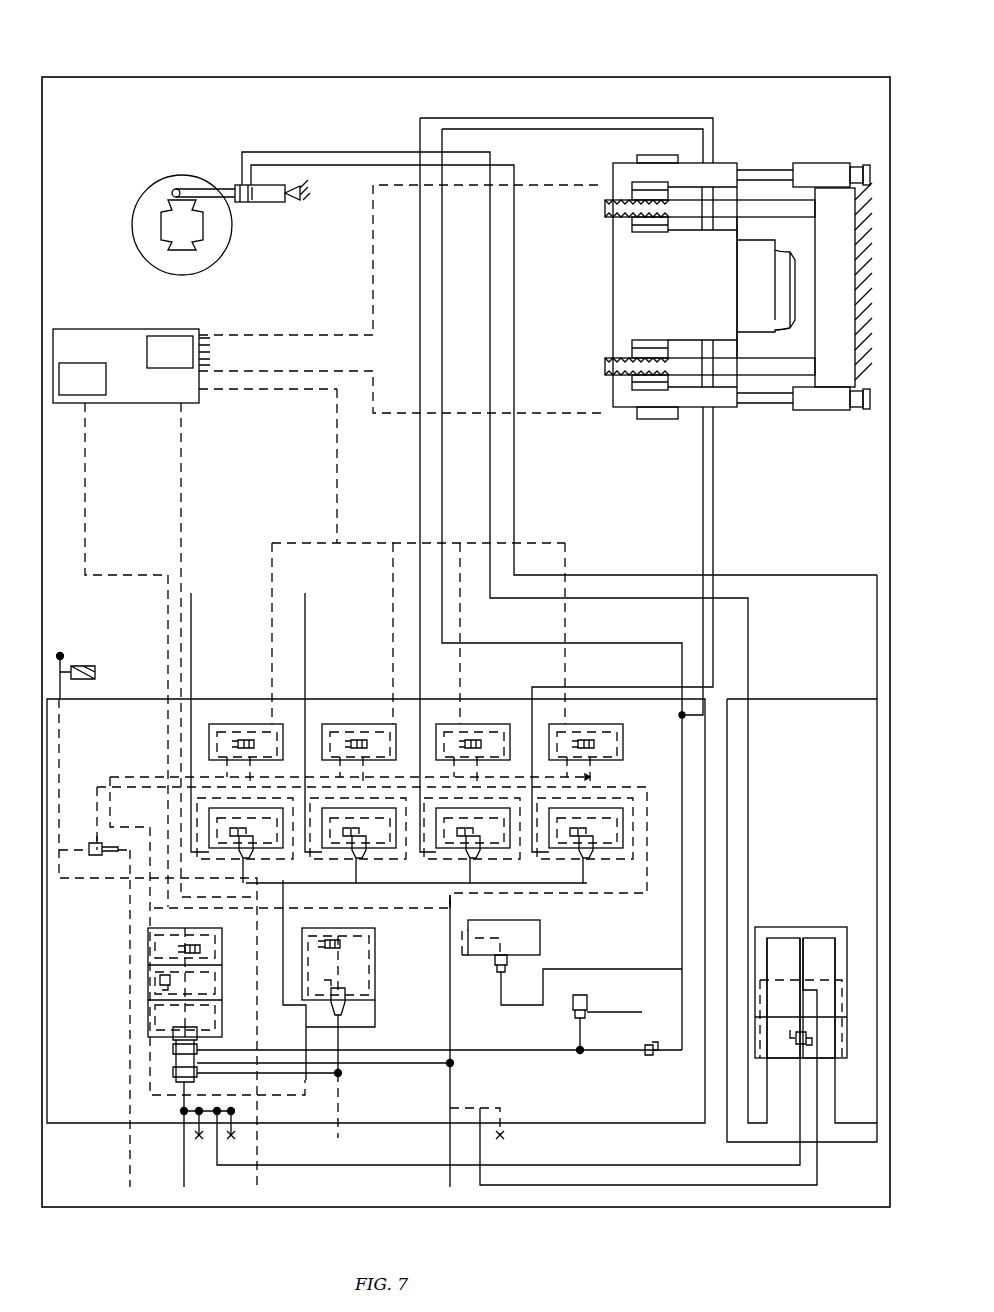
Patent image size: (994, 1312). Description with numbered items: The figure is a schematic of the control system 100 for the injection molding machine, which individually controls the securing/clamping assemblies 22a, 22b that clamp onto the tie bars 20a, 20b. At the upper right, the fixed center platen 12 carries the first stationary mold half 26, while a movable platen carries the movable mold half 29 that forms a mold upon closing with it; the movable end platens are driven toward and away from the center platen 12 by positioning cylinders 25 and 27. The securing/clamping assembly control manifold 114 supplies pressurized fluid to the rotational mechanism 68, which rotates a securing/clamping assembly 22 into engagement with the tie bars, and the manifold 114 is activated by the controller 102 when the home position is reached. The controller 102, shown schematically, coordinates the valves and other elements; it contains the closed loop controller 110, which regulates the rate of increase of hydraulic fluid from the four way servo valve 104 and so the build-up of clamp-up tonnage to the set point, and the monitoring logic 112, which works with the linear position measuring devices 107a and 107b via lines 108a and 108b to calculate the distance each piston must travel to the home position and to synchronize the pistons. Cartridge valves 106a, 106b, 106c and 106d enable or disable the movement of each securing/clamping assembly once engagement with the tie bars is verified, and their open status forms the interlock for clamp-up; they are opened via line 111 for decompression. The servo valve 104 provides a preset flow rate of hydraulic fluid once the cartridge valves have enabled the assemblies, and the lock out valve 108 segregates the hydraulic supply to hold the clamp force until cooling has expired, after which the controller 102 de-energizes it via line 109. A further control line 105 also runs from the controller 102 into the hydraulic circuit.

The control system 100 is at (404, 40).
The center platen 12 is at (838, 260).
The tie bar 20a is at (752, 205).
The tie bar 20b is at (758, 372).
The securing/clamping assembly 22 is at (232, 233).
The securing/clamping assembly 22a is at (628, 235).
The securing/clamping assembly 22b is at (625, 390).
The positioning cylinder 25 is at (822, 170).
The first stationary mold half 26 is at (790, 296).
The positioning cylinder 27 is at (822, 412).
The movable mold half 29 is at (742, 300).
The rotational mechanism 68 is at (210, 278).
The controller 102 is at (93, 328).
The four way servo valve 104 is at (148, 992).
The control line 105 is at (85, 534).
The cartridge valve 106a is at (236, 724).
The cartridge valve 106b is at (352, 724).
The cartridge valve 106c is at (472, 724).
The cartridge valve 106d is at (588, 724).
The linear position measuring device 107a is at (637, 157).
The linear position measuring device 107b is at (655, 421).
The lock out valve 108 is at (375, 962).
The line 108a is at (373, 245).
The line 108b is at (242, 385).
The line 109 is at (181, 535).
The closed loop controller 110 is at (97, 396).
The line 111 is at (337, 458).
The monitoring logic 112 is at (177, 340).
The securing/clamping assembly control manifold 114 is at (612, 302).